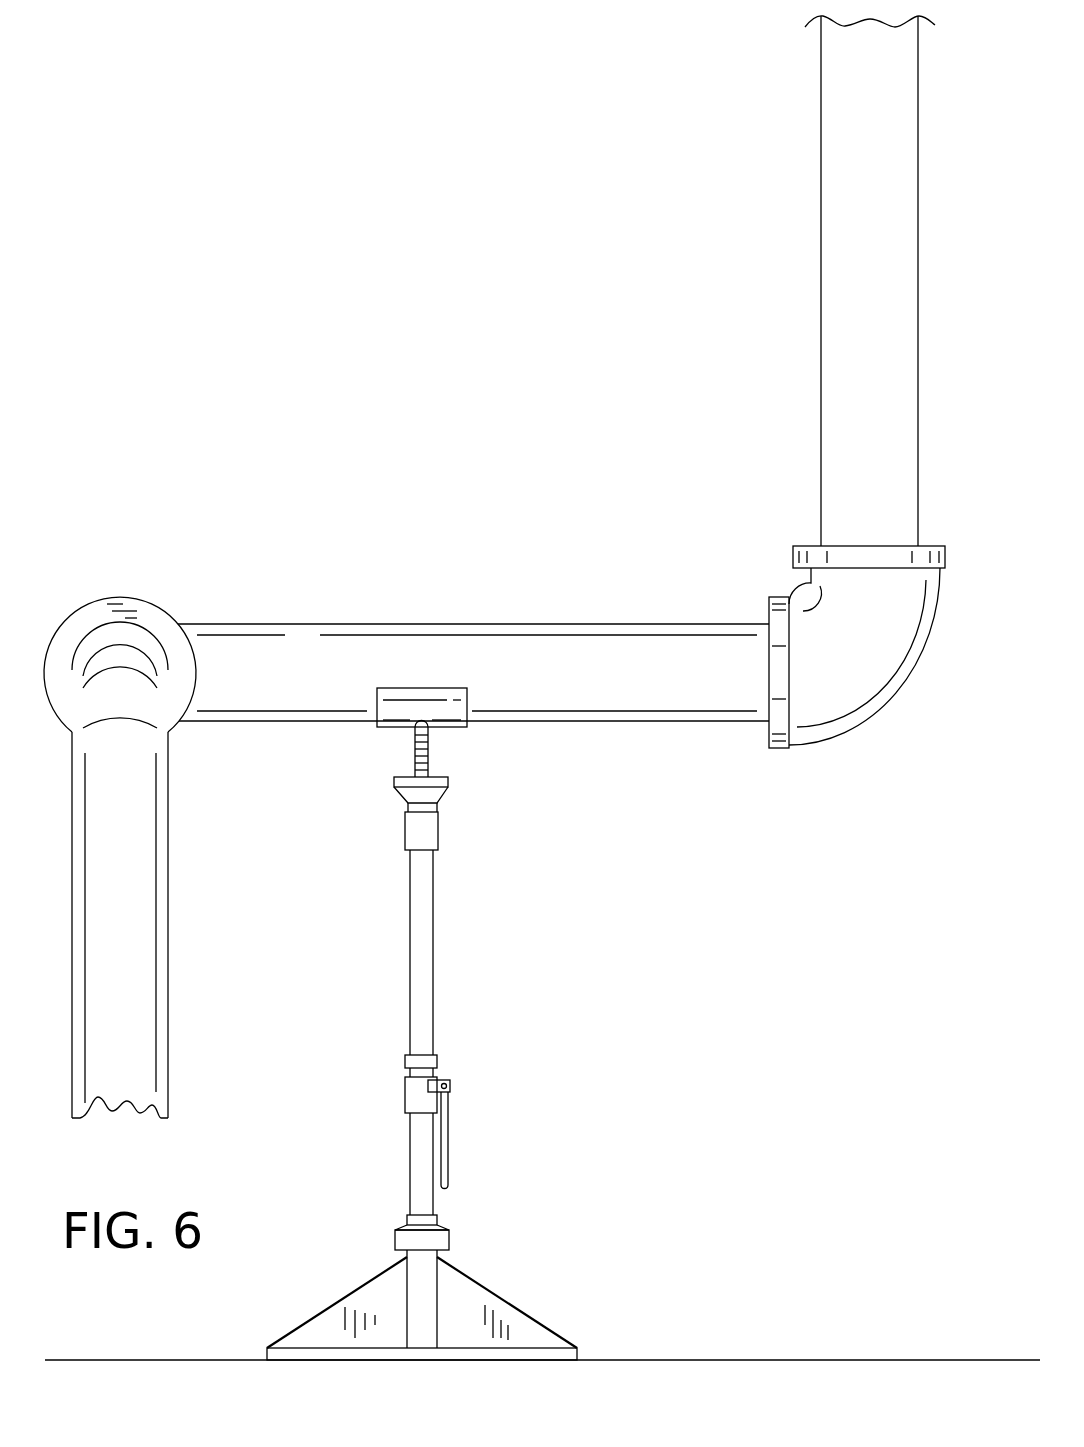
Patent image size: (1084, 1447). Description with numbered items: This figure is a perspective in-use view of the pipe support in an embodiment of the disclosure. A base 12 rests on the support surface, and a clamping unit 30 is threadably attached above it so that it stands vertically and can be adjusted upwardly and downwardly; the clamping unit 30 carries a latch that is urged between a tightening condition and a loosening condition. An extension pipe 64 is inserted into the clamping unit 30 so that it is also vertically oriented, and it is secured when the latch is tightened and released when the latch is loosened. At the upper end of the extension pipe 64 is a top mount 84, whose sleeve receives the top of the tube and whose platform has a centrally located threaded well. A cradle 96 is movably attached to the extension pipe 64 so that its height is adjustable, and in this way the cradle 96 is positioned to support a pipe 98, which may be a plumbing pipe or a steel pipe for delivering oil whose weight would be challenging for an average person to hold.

The base 12 is at (510, 1272).
The clamping unit 30 is at (380, 1145).
The extension pipe 64 is at (470, 943).
The top mount 84 is at (458, 821).
The cradle 96 is at (345, 699).
The pipe 98 is at (537, 624).